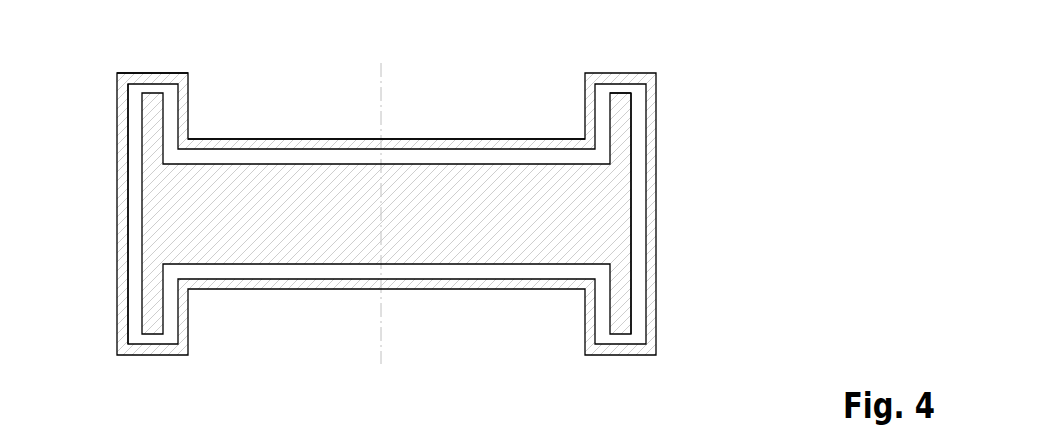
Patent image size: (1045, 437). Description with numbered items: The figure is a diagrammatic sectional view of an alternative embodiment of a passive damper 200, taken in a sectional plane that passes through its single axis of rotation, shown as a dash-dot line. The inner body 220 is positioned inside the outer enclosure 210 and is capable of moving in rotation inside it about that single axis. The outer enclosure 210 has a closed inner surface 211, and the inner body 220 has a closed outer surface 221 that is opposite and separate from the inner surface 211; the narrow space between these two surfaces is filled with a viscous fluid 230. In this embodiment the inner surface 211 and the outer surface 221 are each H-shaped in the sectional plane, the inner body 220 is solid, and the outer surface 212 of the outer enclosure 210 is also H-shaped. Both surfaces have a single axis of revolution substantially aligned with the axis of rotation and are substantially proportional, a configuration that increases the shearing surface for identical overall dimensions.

The passive damper 200 is at (386, 187).
The outer enclosure 210 is at (117, 115).
The inner surface 211 is at (238, 148).
The outer surface 212 is at (155, 73).
The inner body 220 is at (609, 233).
The outer surface 221 is at (631, 120).
The viscous fluid 230 is at (135, 297).